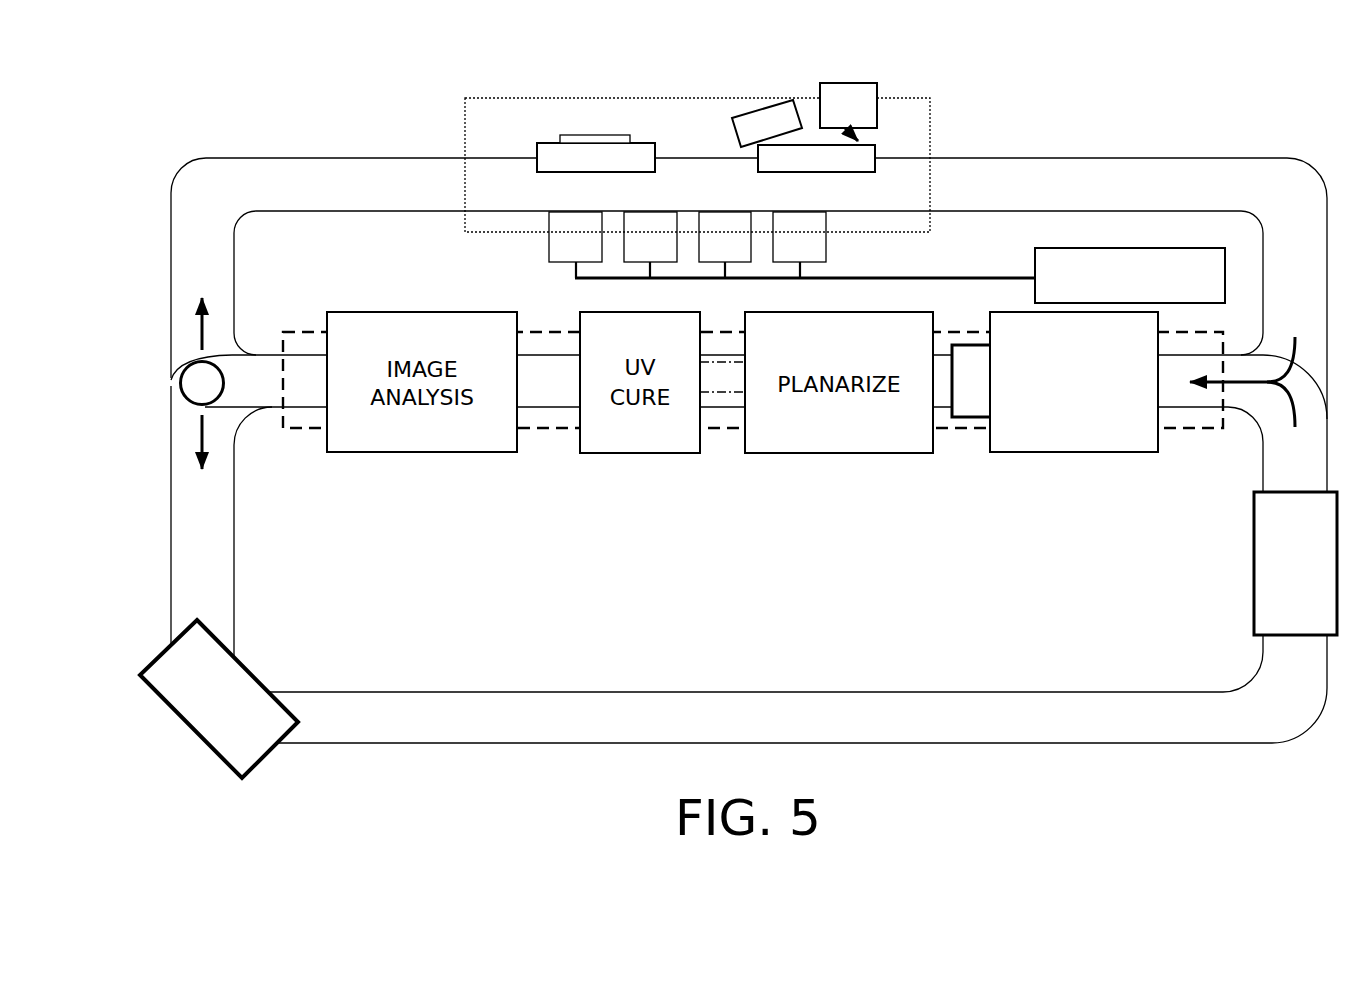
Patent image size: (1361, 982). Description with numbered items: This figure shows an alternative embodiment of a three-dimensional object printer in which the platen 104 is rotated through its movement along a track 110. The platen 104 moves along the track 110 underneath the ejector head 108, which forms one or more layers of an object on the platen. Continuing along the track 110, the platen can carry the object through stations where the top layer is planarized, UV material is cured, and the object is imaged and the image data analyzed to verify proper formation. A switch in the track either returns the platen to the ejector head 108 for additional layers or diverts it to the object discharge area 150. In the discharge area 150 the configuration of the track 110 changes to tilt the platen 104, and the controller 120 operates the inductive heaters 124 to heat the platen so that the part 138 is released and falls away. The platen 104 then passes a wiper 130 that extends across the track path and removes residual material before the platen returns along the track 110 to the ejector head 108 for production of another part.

The platen 104 is at (538, 144).
The ejector head 108 is at (1073, 452).
The track 110 is at (289, 158).
The controller 120 is at (1131, 248).
The inductive heaters 124 is at (827, 238).
The wiper 130 is at (848, 83).
The part 138 is at (595, 135).
The object discharge area 150 is at (553, 116).